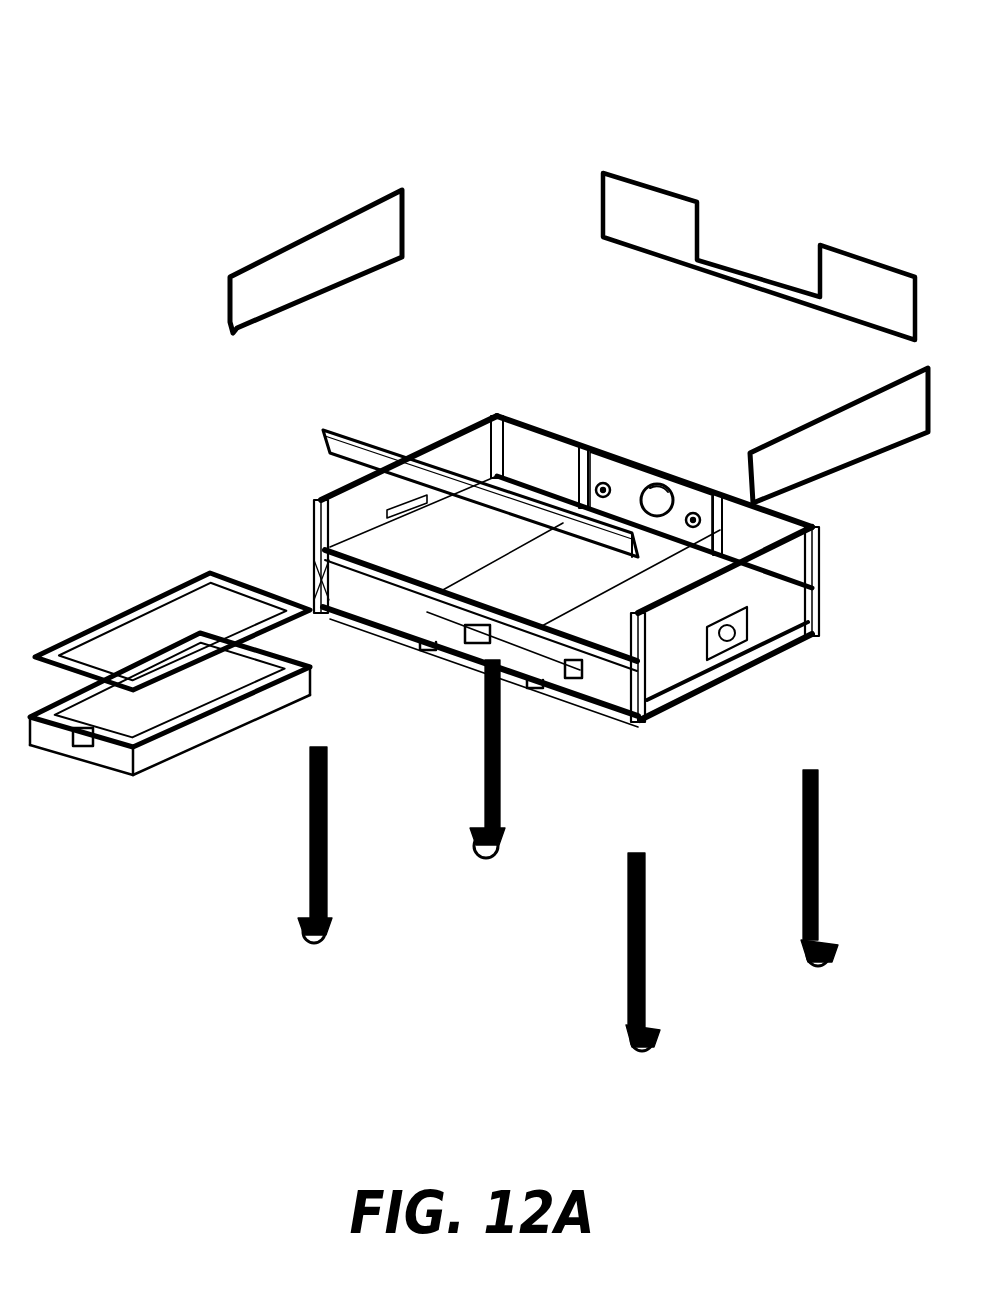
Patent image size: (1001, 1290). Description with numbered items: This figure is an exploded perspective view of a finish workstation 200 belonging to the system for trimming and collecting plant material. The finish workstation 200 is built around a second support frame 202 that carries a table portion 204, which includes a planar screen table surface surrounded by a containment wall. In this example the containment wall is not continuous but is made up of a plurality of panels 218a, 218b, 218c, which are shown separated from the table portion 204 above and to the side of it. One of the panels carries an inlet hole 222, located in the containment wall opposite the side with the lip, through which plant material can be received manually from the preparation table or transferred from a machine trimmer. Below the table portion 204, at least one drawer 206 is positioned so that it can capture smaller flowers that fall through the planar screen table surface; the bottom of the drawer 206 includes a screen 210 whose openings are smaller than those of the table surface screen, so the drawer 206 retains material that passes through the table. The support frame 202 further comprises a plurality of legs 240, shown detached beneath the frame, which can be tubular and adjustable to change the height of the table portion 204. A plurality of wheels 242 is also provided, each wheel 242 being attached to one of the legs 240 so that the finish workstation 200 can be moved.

The finish workstation 200 is at (158, 50).
The second support frame 202 is at (318, 500).
The table portion 204 is at (446, 404).
The drawer 206 is at (197, 735).
The screen 210 is at (178, 612).
The panel 218a is at (342, 220).
The panel 218b is at (640, 178).
The panel 218c is at (903, 445).
The inlet hole 222 is at (640, 468).
The legs 240 is at (310, 860).
The wheels 242 is at (318, 946).